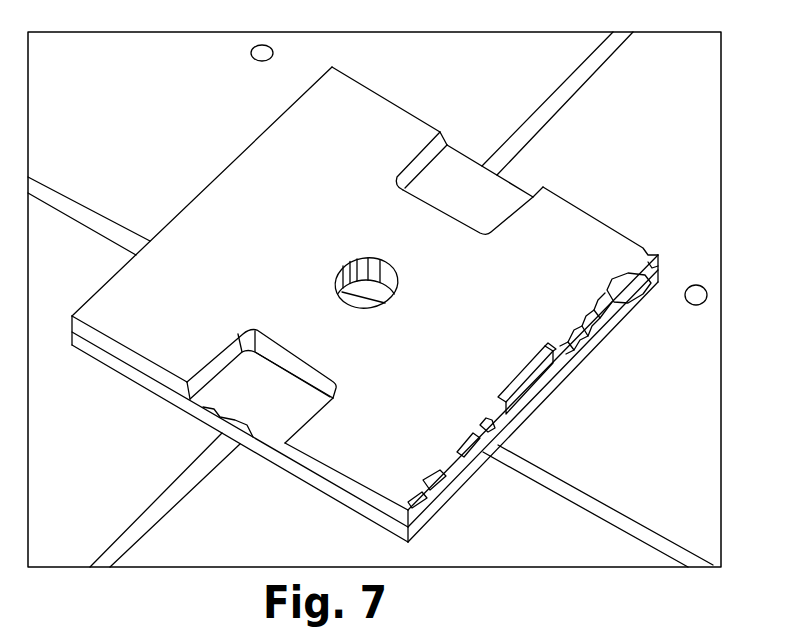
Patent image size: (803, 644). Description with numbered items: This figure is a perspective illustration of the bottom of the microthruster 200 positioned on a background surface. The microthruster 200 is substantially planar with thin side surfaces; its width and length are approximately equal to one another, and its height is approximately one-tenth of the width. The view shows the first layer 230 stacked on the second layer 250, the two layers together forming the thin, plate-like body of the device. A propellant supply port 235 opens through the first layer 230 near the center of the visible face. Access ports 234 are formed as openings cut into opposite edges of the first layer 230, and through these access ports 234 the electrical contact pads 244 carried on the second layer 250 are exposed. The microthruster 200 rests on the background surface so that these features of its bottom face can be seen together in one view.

The microthruster 200 is at (198, 117).
The first layer 230 is at (350, 156).
The access ports 234 is at (485, 151).
The propellant supply port 235 is at (400, 294).
The electrical contact pads 244 is at (493, 188).
The second layer 250 is at (583, 213).